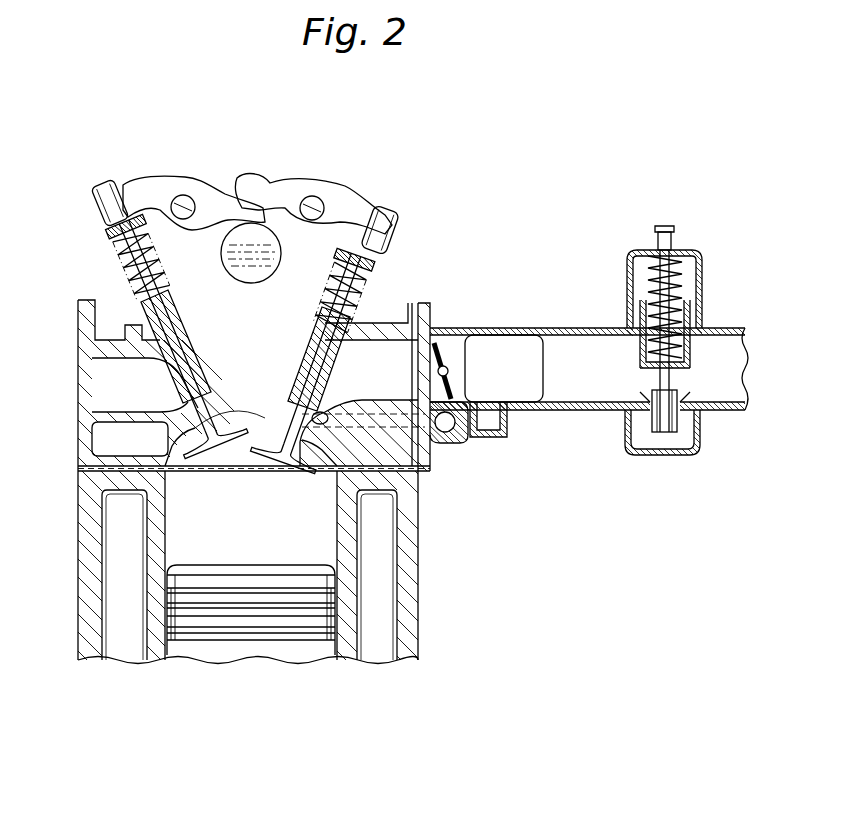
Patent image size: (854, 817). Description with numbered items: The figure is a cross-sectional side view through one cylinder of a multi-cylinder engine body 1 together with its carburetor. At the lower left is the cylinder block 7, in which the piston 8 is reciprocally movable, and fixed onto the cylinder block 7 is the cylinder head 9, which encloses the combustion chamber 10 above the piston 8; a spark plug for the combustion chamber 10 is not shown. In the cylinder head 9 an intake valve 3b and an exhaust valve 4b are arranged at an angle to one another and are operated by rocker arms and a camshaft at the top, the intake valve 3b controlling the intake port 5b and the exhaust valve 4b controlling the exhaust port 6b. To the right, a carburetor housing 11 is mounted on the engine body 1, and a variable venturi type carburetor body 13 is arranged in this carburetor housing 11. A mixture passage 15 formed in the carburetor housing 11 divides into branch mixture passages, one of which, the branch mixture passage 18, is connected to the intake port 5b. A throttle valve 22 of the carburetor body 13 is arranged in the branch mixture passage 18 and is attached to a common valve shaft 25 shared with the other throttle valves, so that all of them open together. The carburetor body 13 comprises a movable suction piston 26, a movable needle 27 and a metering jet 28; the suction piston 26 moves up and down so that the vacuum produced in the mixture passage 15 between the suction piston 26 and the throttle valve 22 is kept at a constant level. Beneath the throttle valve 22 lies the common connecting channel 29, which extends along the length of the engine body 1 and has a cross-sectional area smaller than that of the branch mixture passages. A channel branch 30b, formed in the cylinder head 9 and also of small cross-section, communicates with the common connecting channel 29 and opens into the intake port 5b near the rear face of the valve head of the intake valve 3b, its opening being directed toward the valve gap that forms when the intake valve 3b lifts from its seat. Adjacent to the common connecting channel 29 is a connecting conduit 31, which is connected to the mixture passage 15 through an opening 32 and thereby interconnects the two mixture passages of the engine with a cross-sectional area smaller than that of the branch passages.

The engine body 1 is at (423, 575).
The intake valve 3b is at (318, 356).
The exhaust valve 4b is at (192, 320).
The intake port 5b is at (389, 378).
The exhaust port 6b is at (136, 395).
The cylinder block 7 is at (360, 640).
The piston 8 is at (259, 652).
The cylinder head 9 is at (425, 470).
The combustion chamber 10 is at (262, 504).
The carburetor housing 11 is at (548, 410).
The variable venturi type carburetor body 13 is at (700, 255).
The mixture passage 15 is at (560, 345).
The branch mixture passage 18 is at (452, 347).
The throttle valve 22 is at (455, 388).
The common valve shaft 25 is at (438, 343).
The suction piston 26 is at (683, 350).
The needle 27 is at (664, 382).
The metering jet 28 is at (675, 422).
The common connecting channel 29 is at (447, 428).
The channel branch 30b is at (337, 463).
The connecting conduit 31 is at (490, 425).
The opening 32 is at (500, 395).